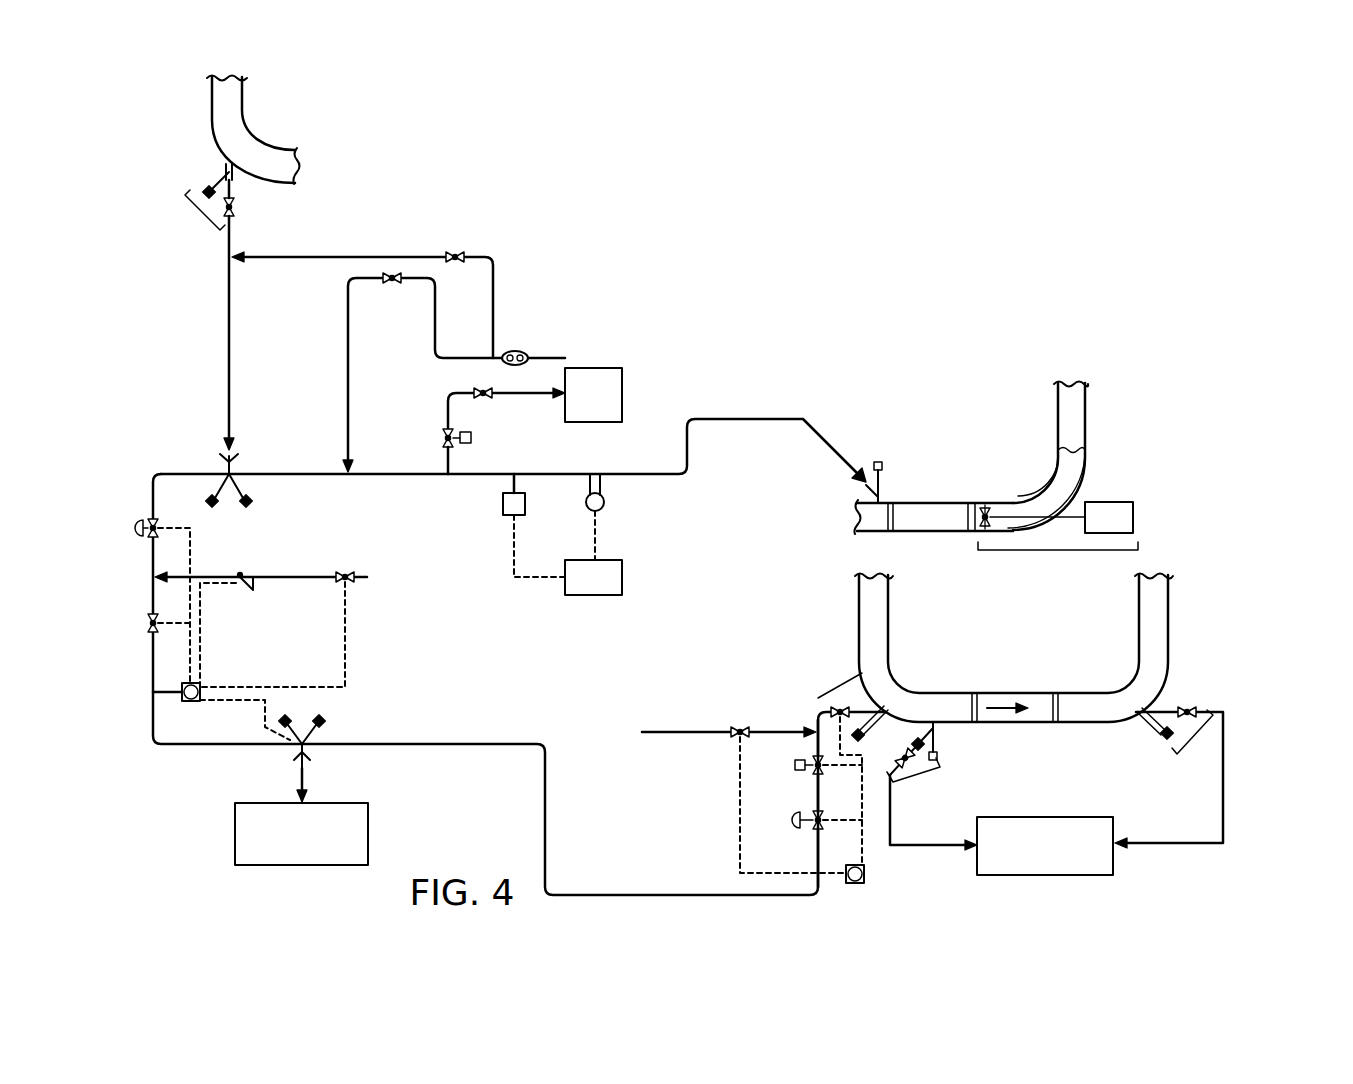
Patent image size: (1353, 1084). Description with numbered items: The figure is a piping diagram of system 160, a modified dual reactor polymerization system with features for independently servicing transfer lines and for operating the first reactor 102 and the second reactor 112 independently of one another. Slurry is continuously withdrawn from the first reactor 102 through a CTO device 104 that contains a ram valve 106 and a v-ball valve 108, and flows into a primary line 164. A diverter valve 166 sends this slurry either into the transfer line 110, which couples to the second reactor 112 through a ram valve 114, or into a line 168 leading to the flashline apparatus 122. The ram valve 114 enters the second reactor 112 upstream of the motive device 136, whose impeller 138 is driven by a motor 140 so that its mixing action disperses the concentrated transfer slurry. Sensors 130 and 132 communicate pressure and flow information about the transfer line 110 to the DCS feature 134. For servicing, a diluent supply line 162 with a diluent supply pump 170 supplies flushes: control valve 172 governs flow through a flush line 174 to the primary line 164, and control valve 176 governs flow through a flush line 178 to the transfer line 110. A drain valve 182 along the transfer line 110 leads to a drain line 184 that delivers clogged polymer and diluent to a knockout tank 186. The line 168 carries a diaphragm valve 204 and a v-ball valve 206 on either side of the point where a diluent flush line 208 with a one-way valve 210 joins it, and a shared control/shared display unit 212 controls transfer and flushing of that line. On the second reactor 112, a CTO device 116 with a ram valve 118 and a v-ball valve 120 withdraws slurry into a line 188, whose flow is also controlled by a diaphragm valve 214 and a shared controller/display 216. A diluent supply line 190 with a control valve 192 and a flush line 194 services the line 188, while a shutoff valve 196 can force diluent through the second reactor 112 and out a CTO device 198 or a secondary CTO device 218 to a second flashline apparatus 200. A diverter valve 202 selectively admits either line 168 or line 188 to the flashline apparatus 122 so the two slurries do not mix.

The first reactor 102 is at (243, 114).
The CTO device 104 is at (200, 222).
The ram valve 106 is at (228, 165).
The v-ball valve 108 is at (236, 207).
The transfer line 110 is at (612, 474).
The second reactor 112 is at (1002, 385).
The ram valve 114 is at (880, 485).
The CTO device 116 is at (838, 686).
The ram valve 118 is at (876, 724).
The v-ball valve 120 is at (832, 712).
The flashline apparatus 122 is at (345, 803).
The pressure sensor 130 is at (503, 510).
The flow sensor 132 is at (604, 508).
The DCS feature 134 is at (602, 596).
The motive device 136 is at (1045, 552).
The impeller 138 is at (983, 505).
The motor 140 is at (1115, 502).
The system 160 is at (757, 197).
The diluent supply line 162 is at (553, 357).
The primary line 164 is at (227, 388).
The diverter valve 166 is at (245, 502).
The line 168 is at (150, 490).
The diluent supply pump 170 is at (521, 350).
The control valve 172 is at (455, 250).
The flush line 174 is at (368, 257).
The control valve 176 is at (381, 279).
The flush line 178 is at (430, 292).
The drain valve 182 is at (444, 440).
The drain line 184 is at (530, 398).
The knockout tank 186 is at (623, 395).
The line 188 is at (816, 860).
The diluent supply line 190 is at (656, 733).
The control valve 192 is at (738, 738).
The flush line 194 is at (783, 732).
The shutoff valve 196 is at (813, 762).
The CTO device 198 is at (920, 785).
The second flashline apparatus 200 is at (1085, 817).
The diverter valve 202 is at (323, 721).
The diaphragm valve 204 is at (147, 538).
The v-ball valve 206 is at (150, 623).
The diluent flush line 208 is at (355, 577).
The one-way valve 210 is at (240, 573).
The shared control/shared display unit 212 is at (192, 705).
The diaphragm valve 214 is at (813, 815).
The shared controller/display 216 is at (858, 885).
The secondary CTO device 218 is at (1200, 737).